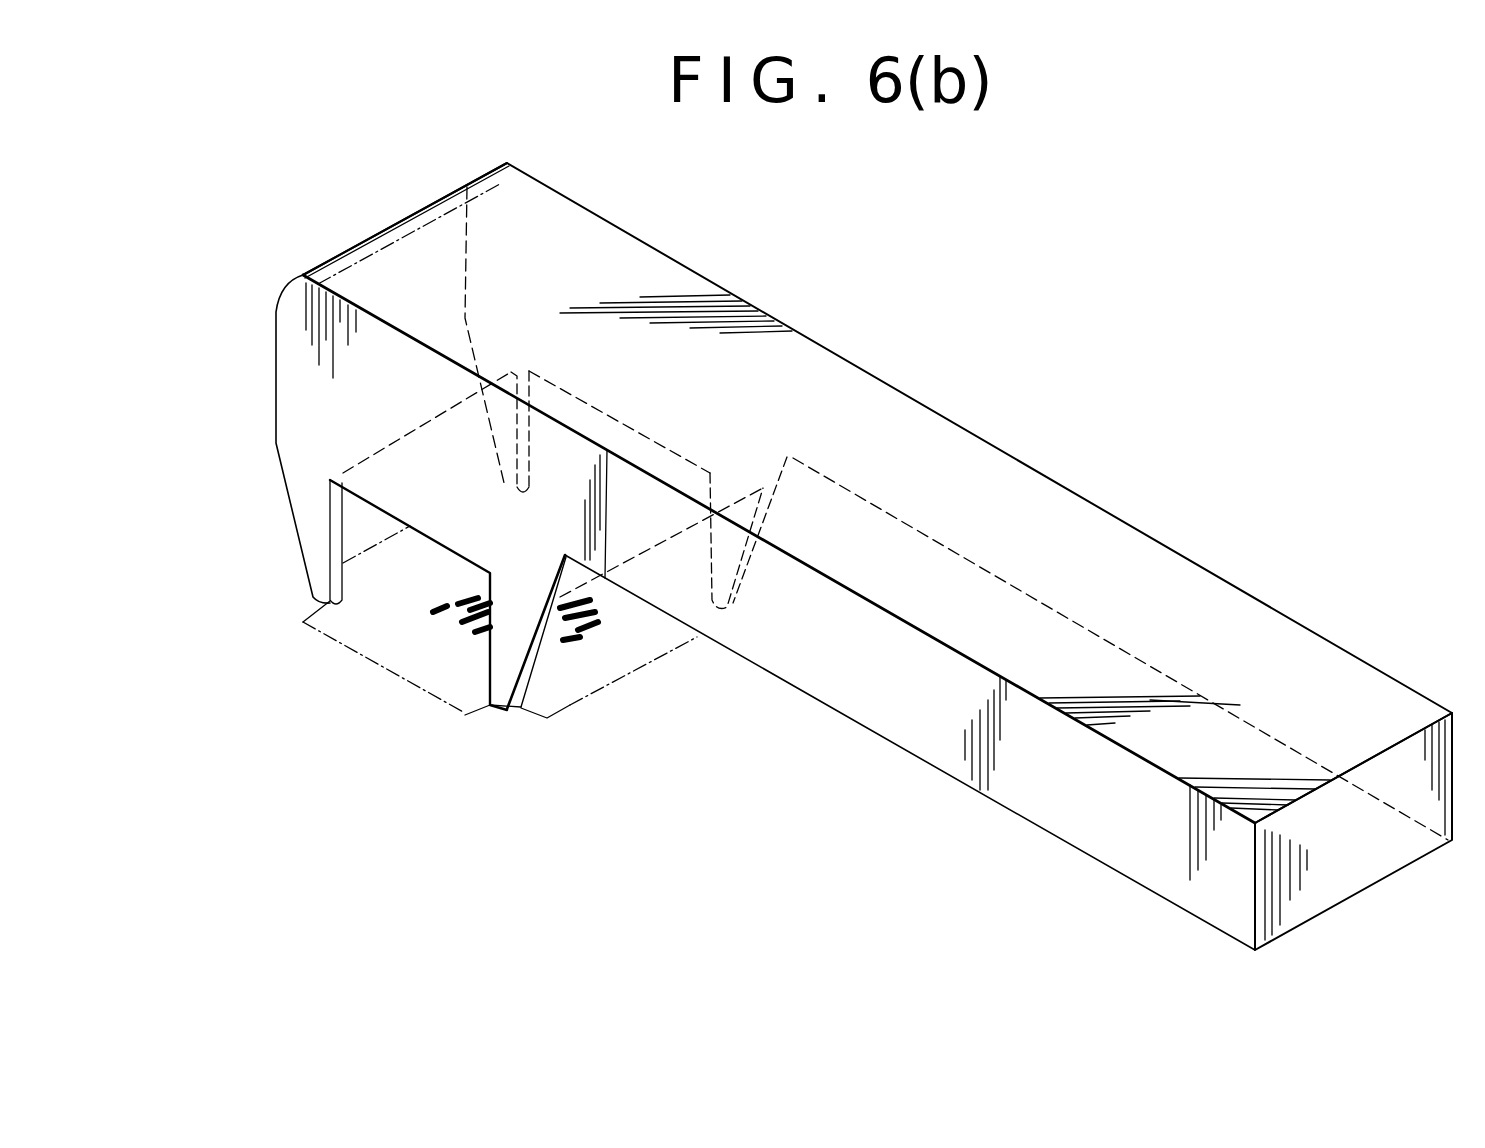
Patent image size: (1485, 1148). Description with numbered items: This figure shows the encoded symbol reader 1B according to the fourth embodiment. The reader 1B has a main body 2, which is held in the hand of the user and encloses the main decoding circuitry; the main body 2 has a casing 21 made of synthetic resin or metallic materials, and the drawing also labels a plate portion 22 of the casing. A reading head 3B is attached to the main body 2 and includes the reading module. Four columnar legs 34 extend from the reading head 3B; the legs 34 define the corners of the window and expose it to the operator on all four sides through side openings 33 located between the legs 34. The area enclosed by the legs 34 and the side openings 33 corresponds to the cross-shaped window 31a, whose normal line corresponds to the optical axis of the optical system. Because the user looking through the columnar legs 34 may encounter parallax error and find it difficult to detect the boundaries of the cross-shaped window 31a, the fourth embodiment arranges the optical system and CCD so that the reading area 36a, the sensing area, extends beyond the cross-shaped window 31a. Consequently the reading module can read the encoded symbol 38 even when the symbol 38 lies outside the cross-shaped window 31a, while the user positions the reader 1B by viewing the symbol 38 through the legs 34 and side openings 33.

The encoded symbol reader 1B is at (1104, 287).
The main body 2 is at (1080, 490).
The casing 21 is at (1247, 637).
The side plate 22 is at (388, 250).
The side openings 33 is at (412, 540).
The columnar legs 34 is at (505, 447).
The cross-shaped window 31a is at (383, 573).
The reading area 36a is at (188, 695).
The encoded symbol 38 is at (452, 620).
The reading head 3B is at (534, 680).